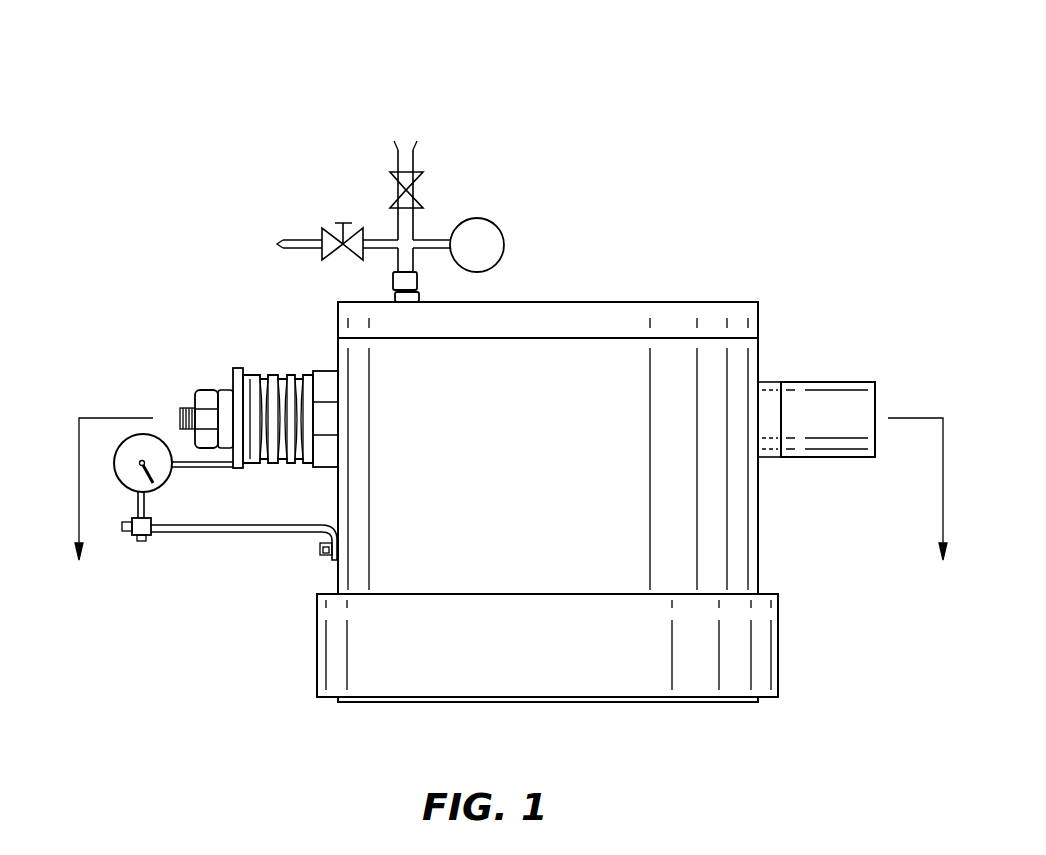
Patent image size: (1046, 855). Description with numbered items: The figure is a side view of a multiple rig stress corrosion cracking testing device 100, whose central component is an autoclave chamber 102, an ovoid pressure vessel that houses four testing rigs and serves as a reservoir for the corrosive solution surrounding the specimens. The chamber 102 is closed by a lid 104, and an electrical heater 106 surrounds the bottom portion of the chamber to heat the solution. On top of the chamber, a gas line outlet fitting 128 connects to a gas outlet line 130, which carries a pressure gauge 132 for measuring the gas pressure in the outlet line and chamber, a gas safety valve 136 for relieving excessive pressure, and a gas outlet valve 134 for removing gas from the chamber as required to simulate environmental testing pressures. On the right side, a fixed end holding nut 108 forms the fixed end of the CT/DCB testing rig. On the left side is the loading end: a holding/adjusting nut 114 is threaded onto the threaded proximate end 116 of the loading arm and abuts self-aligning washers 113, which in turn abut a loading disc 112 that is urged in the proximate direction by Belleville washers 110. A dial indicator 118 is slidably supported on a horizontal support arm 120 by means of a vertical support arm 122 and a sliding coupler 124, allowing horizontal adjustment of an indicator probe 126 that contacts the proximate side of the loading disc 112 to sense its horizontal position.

The multiple rig stress corrosion cracking testing device 100 is at (768, 85).
The autoclave chamber 102 is at (548, 502).
The lid 104 is at (672, 320).
The electrical heater 106 is at (547, 645).
The fixed end holding nut 108 is at (816, 419).
The Belleville washers 110 is at (275, 375).
The loading disc 112 is at (243, 372).
The self-aligning washers 113 is at (230, 390).
The holding/adjusting nut 114 is at (196, 395).
The threaded proximate end 116 is at (186, 413).
The dial indicator 118 is at (118, 480).
The horizontal support arm 120 is at (260, 532).
The vertical support arm 122 is at (147, 500).
The sliding coupler 124 is at (150, 535).
The indicator probe 126 is at (222, 468).
The gas line outlet fitting 128 is at (418, 280).
The gas outlet line 130 is at (425, 237).
The pressure gauge 132 is at (497, 226).
The gas outlet valve 134 is at (397, 172).
The gas safety valve 136 is at (322, 230).